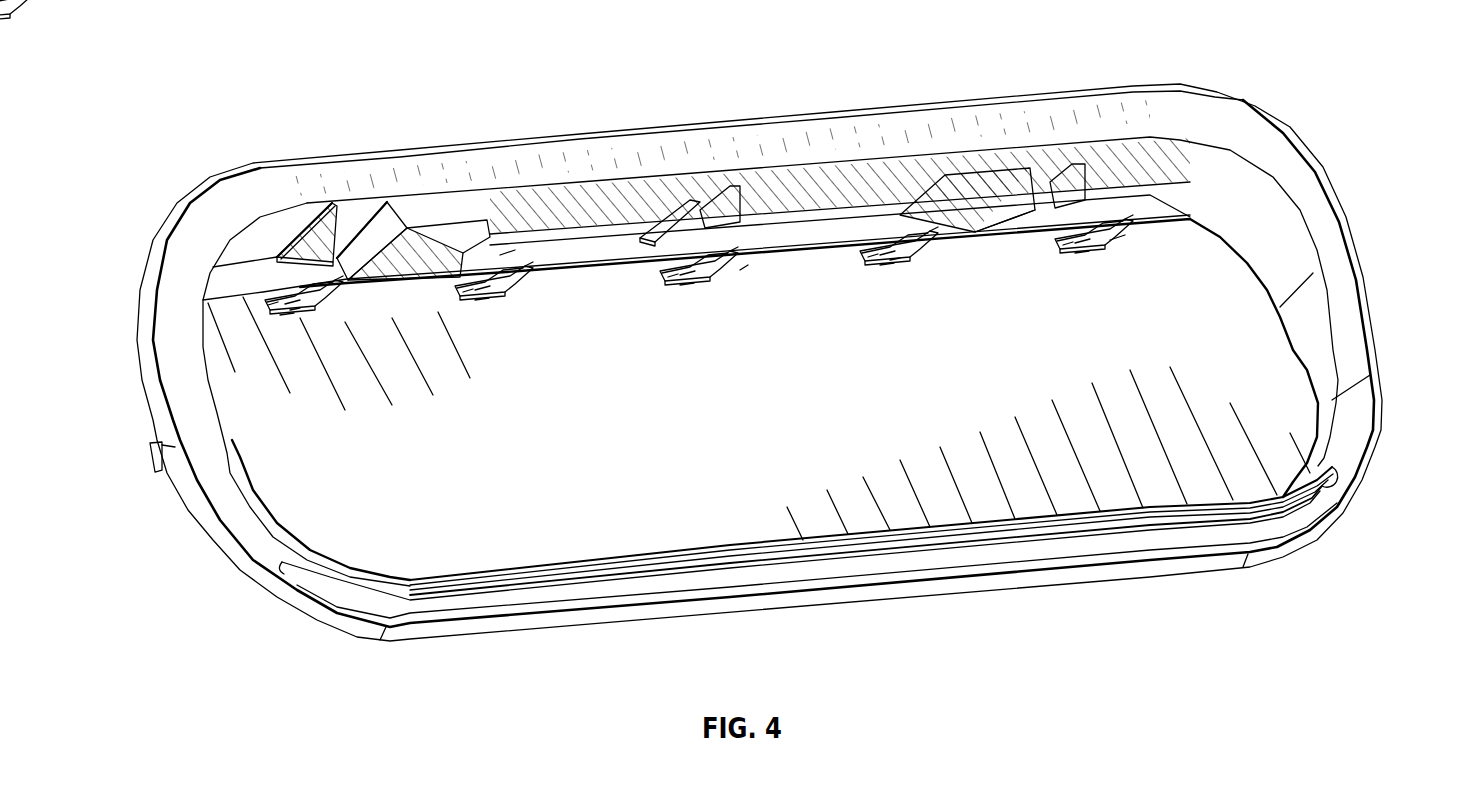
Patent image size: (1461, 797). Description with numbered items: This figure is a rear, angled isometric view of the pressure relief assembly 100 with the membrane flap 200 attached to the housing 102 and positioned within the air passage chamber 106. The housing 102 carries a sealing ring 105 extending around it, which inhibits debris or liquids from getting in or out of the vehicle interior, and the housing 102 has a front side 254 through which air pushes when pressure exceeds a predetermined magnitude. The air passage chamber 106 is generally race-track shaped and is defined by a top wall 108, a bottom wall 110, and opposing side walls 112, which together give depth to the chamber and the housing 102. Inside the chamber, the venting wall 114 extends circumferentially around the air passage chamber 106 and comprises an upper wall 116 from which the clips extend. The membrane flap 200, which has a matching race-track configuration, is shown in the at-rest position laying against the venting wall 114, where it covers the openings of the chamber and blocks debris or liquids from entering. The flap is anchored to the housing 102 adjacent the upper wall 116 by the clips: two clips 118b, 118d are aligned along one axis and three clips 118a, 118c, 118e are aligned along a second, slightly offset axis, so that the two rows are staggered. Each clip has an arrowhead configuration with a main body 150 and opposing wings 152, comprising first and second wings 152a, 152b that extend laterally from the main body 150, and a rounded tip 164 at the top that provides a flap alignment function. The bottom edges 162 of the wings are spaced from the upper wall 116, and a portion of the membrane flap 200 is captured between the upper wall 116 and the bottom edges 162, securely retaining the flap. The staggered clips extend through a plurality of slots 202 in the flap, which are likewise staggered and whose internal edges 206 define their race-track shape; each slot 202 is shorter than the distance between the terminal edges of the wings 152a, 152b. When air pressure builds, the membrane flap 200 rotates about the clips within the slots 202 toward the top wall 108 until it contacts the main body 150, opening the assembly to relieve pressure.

The pressure relief assembly 100 is at (153, 145).
The housing 102 is at (1233, 127).
The sealing ring 105 is at (152, 255).
The air passage chamber 106 is at (1218, 216).
The top wall 108 is at (785, 228).
The bottom wall 110 is at (755, 545).
The side walls 112 is at (245, 445).
The venting wall 114 is at (765, 242).
The upper wall 116 is at (227, 292).
The clip 118a is at (290, 212).
The clip 118b is at (495, 215).
The clip 118c is at (720, 220).
The clip 118d is at (920, 235).
The clip 118e is at (1085, 220).
The main body 150 is at (318, 308).
The wings 152 is at (283, 272).
The first wing 152a is at (665, 238).
The second wing 152b is at (750, 272).
The bottom edges 162 is at (257, 305).
The rounded tip 164 is at (510, 256).
The membrane flap 200 is at (1283, 417).
The slots 202 is at (482, 300).
The internal edges 206 is at (305, 312).
The front side 254 is at (150, 455).